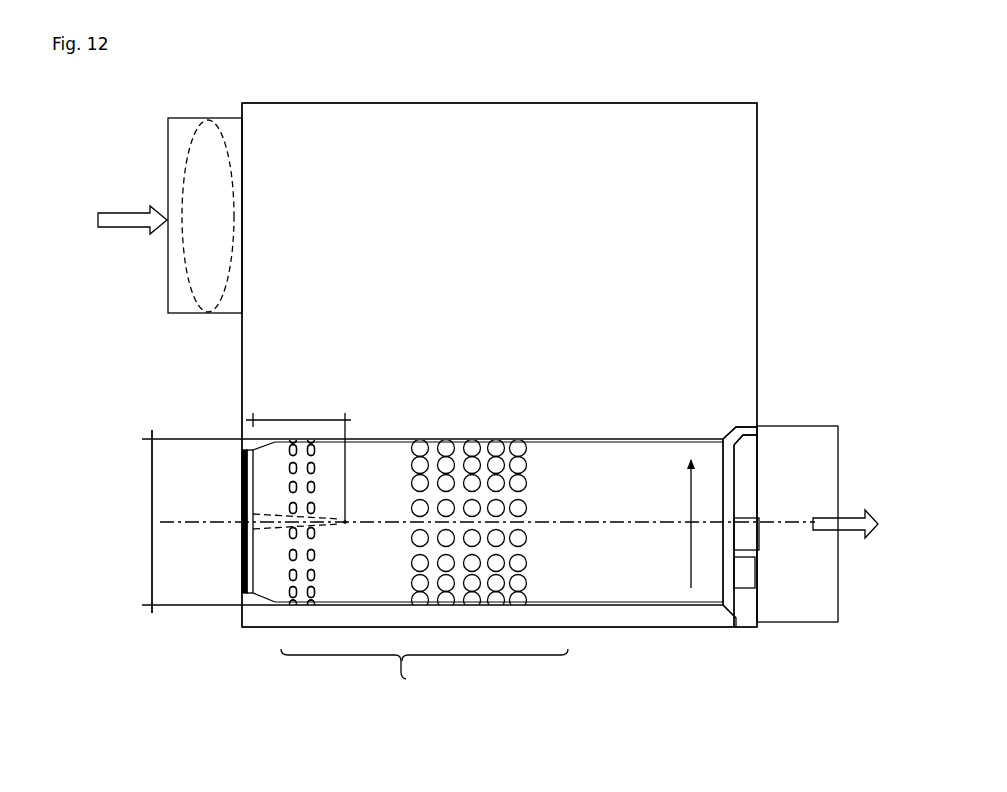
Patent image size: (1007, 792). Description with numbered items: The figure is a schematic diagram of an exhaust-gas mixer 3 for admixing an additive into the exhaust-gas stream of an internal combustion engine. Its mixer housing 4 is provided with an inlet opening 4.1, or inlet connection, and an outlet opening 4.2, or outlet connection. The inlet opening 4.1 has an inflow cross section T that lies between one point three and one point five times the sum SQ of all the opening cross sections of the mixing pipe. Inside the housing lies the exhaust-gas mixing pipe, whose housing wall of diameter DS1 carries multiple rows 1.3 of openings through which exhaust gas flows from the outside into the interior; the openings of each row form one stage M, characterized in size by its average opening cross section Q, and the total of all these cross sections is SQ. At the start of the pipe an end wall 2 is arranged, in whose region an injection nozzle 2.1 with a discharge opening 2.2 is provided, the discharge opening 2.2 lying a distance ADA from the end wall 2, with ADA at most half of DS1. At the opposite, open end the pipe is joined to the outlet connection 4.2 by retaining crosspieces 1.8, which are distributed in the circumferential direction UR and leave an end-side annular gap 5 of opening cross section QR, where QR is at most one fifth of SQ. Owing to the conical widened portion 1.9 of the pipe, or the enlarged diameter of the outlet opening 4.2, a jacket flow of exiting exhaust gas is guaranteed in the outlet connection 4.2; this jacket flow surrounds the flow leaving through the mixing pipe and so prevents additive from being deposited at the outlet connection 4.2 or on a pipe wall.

The exhaust-gas mixer 3 is at (508, 76).
The mixer housing 4 is at (414, 102).
The inlet opening 4.1 is at (168, 145).
The outlet opening 4.2 is at (809, 488).
The inflow cross section T is at (227, 283).
The end wall 2 is at (248, 478).
The injection nozzle 2.1 is at (343, 525).
The discharge opening 2.2 is at (349, 524).
The rows of openings 1.3 is at (446, 437).
The retaining crosspieces 1.8 is at (736, 430).
The conical widened portion 1.9 is at (724, 624).
The annular gap 5 is at (748, 444).
The opening cross section of annular gap QR is at (728, 533).
The stage M is at (321, 578).
The average opening cross section Q is at (302, 521).
The circumferential direction UR is at (691, 576).
The sum of all opening cross sections SQ is at (424, 676).
The diameter of housing wall DS1 is at (152, 448).
The distance of discharge opening from end wall ADA is at (284, 421).